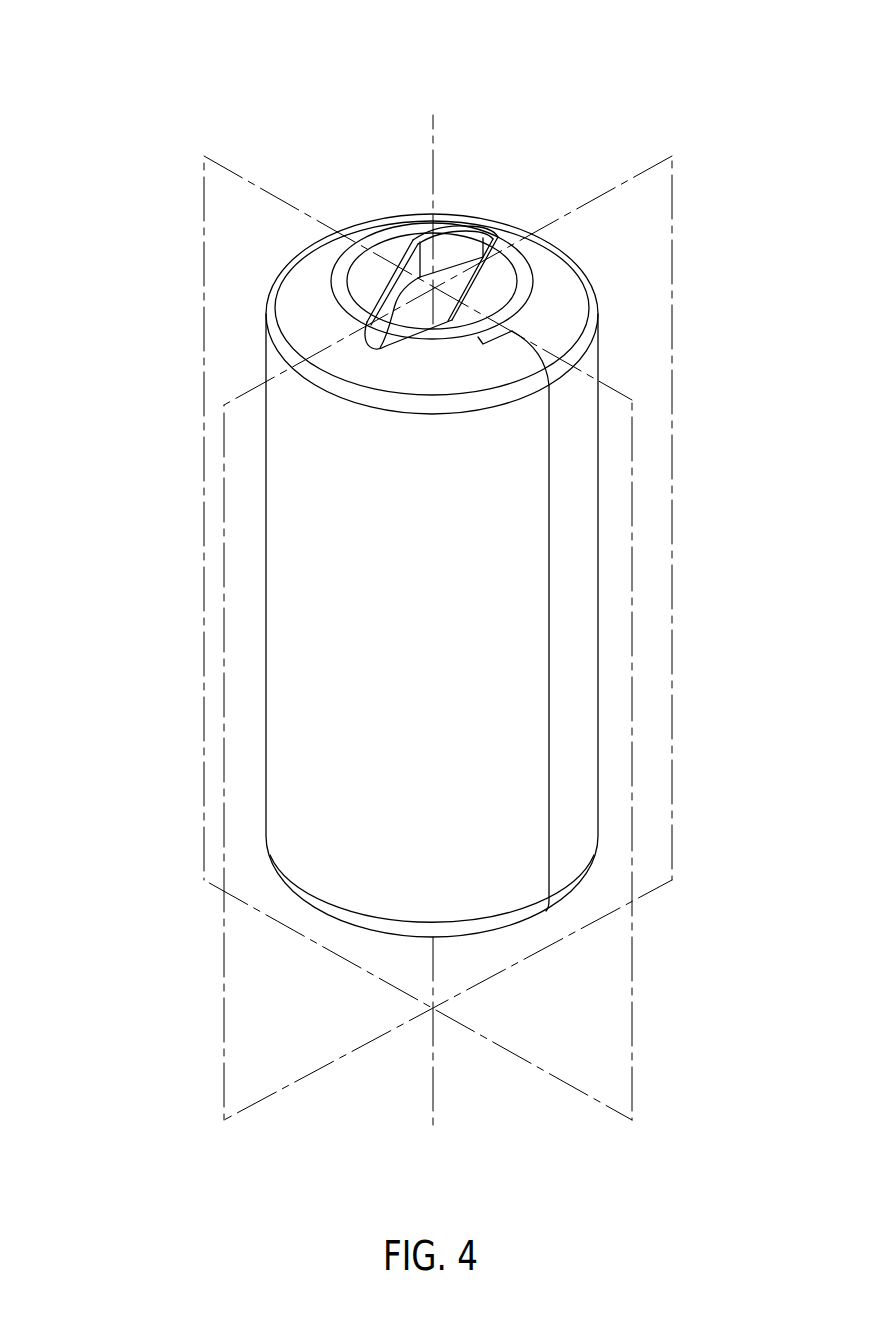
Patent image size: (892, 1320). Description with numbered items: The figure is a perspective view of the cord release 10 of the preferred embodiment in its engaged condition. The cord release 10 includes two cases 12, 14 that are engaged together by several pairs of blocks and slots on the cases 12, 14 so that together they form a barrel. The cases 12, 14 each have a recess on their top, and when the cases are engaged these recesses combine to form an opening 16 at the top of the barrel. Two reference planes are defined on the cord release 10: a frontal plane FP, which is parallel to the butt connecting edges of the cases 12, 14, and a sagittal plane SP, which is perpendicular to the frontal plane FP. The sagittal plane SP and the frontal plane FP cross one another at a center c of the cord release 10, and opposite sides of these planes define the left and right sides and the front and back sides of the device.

The cord release 10 is at (702, 225).
The case 12 is at (297, 570).
The case 14 is at (572, 620).
The opening 16 is at (458, 252).
The center c is at (433, 173).
The frontal plane FP is at (248, 179).
The sagittal plane SP is at (248, 390).